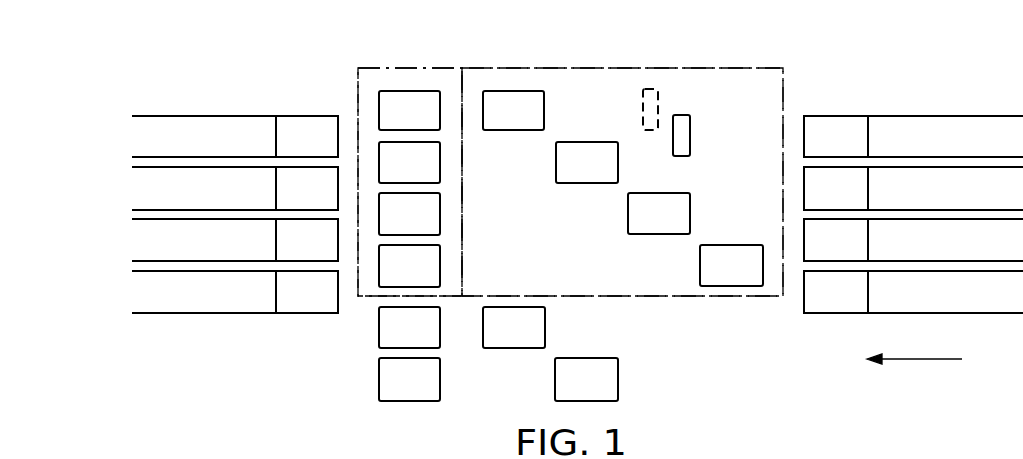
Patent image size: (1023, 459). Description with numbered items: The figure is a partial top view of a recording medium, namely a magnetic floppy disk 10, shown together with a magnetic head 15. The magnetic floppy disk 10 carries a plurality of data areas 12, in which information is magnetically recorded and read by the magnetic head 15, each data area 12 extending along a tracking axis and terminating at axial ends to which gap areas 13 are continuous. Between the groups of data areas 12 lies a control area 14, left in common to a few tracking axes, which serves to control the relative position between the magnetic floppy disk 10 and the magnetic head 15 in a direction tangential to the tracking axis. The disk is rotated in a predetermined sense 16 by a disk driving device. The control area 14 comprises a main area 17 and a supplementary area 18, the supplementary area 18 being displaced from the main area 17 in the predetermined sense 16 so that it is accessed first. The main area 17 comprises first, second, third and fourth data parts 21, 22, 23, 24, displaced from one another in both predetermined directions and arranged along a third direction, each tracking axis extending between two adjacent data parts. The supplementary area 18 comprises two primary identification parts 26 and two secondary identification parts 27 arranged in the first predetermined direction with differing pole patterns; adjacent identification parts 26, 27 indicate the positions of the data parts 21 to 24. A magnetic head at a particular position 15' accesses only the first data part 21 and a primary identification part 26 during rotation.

The magnetic floppy disk 10 is at (328, 373).
The data area 12 is at (262, 116).
The gap area 13 is at (302, 116).
The control area 14 is at (783, 43).
The magnetic head 15 is at (709, 135).
The magnetic head at particular position 15' is at (683, 103).
The predetermined sense 16 is at (920, 359).
The main area 17 is at (636, 66).
The supplementary area 18 is at (383, 66).
The first data part 21 is at (544, 108).
The second data part 22 is at (618, 160).
The third data part 23 is at (690, 210).
The fourth data part 24 is at (700, 262).
The primary identification part 26 is at (440, 109).
The secondary identification part 27 is at (440, 162).